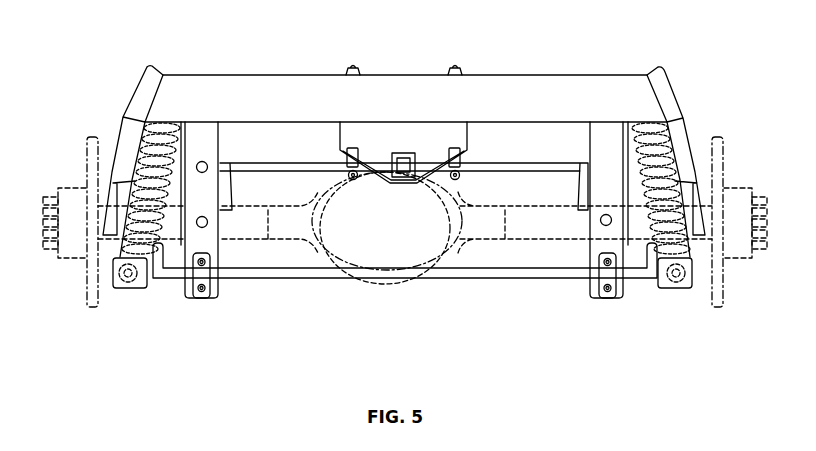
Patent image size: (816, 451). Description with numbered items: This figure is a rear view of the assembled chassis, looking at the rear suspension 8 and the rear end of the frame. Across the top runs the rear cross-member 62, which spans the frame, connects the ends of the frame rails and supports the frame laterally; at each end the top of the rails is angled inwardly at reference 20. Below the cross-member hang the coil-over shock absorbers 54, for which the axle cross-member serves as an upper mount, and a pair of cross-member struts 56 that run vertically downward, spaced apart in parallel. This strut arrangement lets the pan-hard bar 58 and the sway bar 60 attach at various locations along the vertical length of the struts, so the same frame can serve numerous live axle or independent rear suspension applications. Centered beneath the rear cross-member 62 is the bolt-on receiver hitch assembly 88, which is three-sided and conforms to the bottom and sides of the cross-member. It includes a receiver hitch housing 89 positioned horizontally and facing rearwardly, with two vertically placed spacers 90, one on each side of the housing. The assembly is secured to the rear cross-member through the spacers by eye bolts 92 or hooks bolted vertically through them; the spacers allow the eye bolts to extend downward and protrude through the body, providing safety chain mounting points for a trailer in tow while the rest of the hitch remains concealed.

The rear suspension 8 is at (330, 308).
The inward angle of frame rail 20 is at (138, 90).
The coil-over shock absorbers 54 is at (150, 160).
The cross-member struts 56 is at (212, 240).
The pan-hard bar 58 is at (302, 168).
The sway bar 60 is at (497, 282).
The rear cross-member 62 is at (258, 73).
The receiver hitch assembly 88 is at (458, 100).
The receiver hitch housing 89 is at (403, 152).
The spacers 90 is at (343, 137).
The eye bolts 92 is at (443, 160).